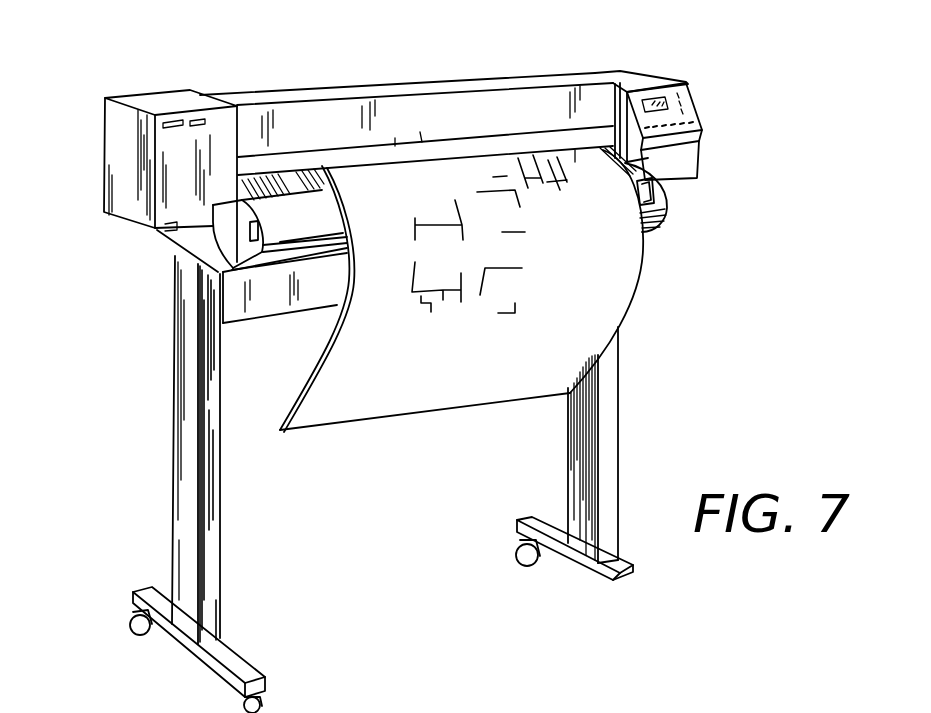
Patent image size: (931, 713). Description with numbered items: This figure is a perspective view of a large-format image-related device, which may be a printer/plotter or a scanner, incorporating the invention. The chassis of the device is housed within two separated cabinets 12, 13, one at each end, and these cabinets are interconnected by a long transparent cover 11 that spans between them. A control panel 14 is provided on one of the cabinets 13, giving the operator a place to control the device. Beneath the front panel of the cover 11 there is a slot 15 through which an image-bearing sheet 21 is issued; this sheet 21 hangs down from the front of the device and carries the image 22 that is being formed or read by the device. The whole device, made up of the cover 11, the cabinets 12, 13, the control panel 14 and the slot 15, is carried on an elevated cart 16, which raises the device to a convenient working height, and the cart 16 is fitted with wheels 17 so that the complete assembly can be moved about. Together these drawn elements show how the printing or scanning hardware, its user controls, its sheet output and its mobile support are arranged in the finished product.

The transparent cover 11 is at (390, 90).
The cabinet 12 is at (167, 137).
The cabinet 13 is at (630, 72).
The control panel 14 is at (693, 103).
The slot 15 is at (278, 182).
The elevated cart 16 is at (283, 313).
The wheels 17 is at (278, 712).
The image-bearing sheet 21 is at (362, 388).
The image 22 is at (522, 225).